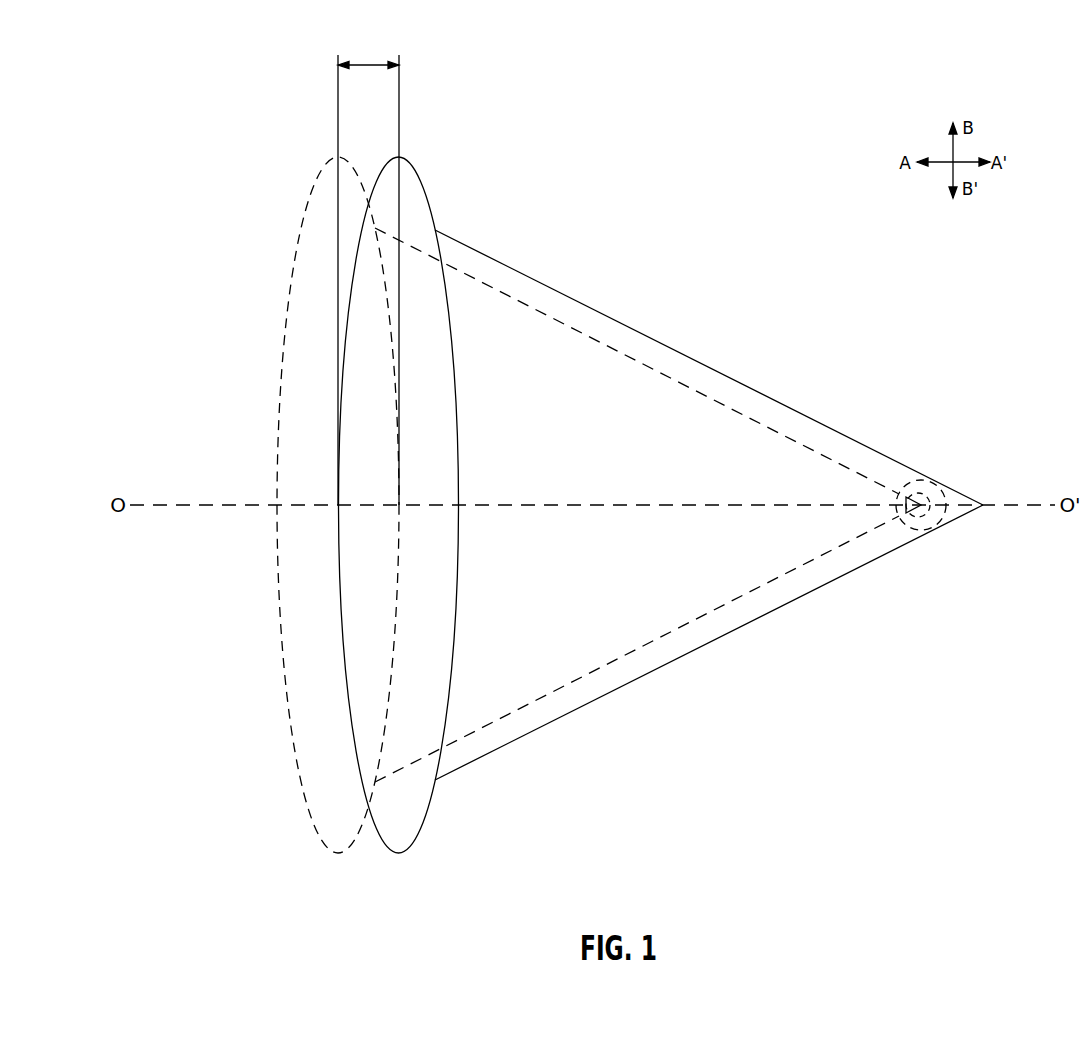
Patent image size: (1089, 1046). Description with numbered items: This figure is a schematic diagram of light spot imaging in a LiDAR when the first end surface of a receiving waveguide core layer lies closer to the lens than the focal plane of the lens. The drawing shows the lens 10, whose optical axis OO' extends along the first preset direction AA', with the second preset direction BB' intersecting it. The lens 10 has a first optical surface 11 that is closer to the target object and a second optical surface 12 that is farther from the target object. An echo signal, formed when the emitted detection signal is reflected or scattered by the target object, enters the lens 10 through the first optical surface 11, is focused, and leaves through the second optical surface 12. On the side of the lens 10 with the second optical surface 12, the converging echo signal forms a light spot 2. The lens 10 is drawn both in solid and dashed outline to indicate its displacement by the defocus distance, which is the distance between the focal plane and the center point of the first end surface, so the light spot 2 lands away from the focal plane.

The lens 10 is at (316, 180).
The first optical surface 11 is at (341, 670).
The second optical surface 12 is at (457, 668).
The light spot 2 is at (922, 480).